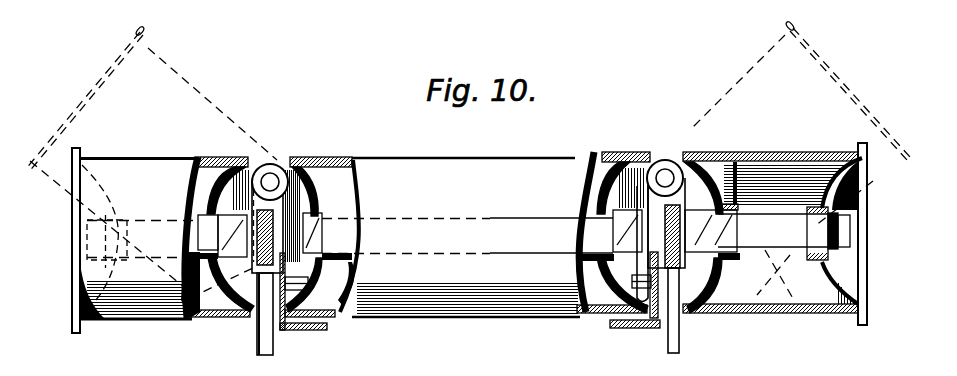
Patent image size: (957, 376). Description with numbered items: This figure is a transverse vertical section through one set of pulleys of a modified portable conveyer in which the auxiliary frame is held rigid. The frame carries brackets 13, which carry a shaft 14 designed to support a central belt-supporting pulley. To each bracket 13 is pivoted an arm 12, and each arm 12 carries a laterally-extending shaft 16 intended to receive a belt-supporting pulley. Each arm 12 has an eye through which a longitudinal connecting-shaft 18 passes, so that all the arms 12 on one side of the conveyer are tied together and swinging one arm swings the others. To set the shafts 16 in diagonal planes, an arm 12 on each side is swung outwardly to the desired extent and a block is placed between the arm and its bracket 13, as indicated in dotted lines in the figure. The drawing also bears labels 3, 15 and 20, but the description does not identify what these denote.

The bracket plate 3 is at (328, 327).
The arm 12 is at (274, 347).
The bracket 13 is at (303, 235).
The shaft 14 is at (523, 247).
The cylindrical tube 15 is at (466, 237).
The laterally-extending shaft 16 is at (80, 242).
The longitudinal connecting-shaft 18 is at (273, 188).
The outer shell 20 is at (755, 141).